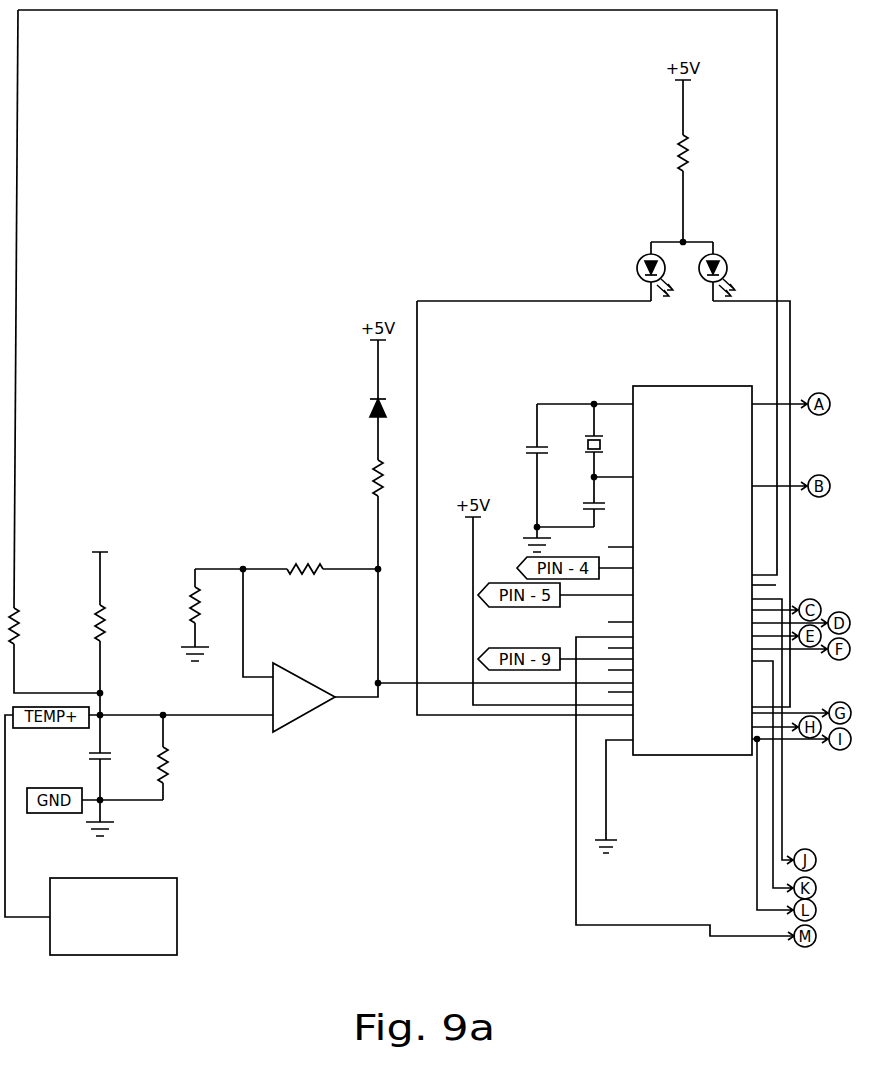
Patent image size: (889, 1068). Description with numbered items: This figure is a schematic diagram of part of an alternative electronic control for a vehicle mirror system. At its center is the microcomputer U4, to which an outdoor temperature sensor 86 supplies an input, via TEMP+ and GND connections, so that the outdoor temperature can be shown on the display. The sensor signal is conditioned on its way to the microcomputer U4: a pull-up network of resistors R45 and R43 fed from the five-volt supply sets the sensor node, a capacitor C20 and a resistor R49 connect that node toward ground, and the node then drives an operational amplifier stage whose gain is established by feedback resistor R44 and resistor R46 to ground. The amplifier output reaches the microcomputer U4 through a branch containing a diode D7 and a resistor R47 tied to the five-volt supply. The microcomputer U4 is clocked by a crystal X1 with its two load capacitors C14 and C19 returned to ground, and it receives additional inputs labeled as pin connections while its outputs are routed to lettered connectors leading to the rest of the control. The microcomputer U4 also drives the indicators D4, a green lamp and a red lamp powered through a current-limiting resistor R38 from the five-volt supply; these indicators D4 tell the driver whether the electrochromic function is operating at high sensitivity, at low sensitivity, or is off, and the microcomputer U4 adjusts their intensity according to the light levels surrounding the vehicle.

The outdoor temperature sensor 86 is at (177, 928).
The resistor R45 is at (23, 626).
The resistor R43 is at (103, 642).
The capacitor C20 is at (86, 770).
The resistor R49 is at (171, 757).
The resistor R46 is at (199, 615).
The resistor R44 is at (286, 557).
The diode D7 is at (364, 408).
The resistor R47 is at (387, 514).
The resistor R38 is at (694, 188).
The indicators D4 is at (678, 285).
The microcomputer U4 is at (692, 570).
The capacitor C14 is at (524, 465).
The crystal X1 is at (603, 440).
The capacitor C19 is at (581, 502).